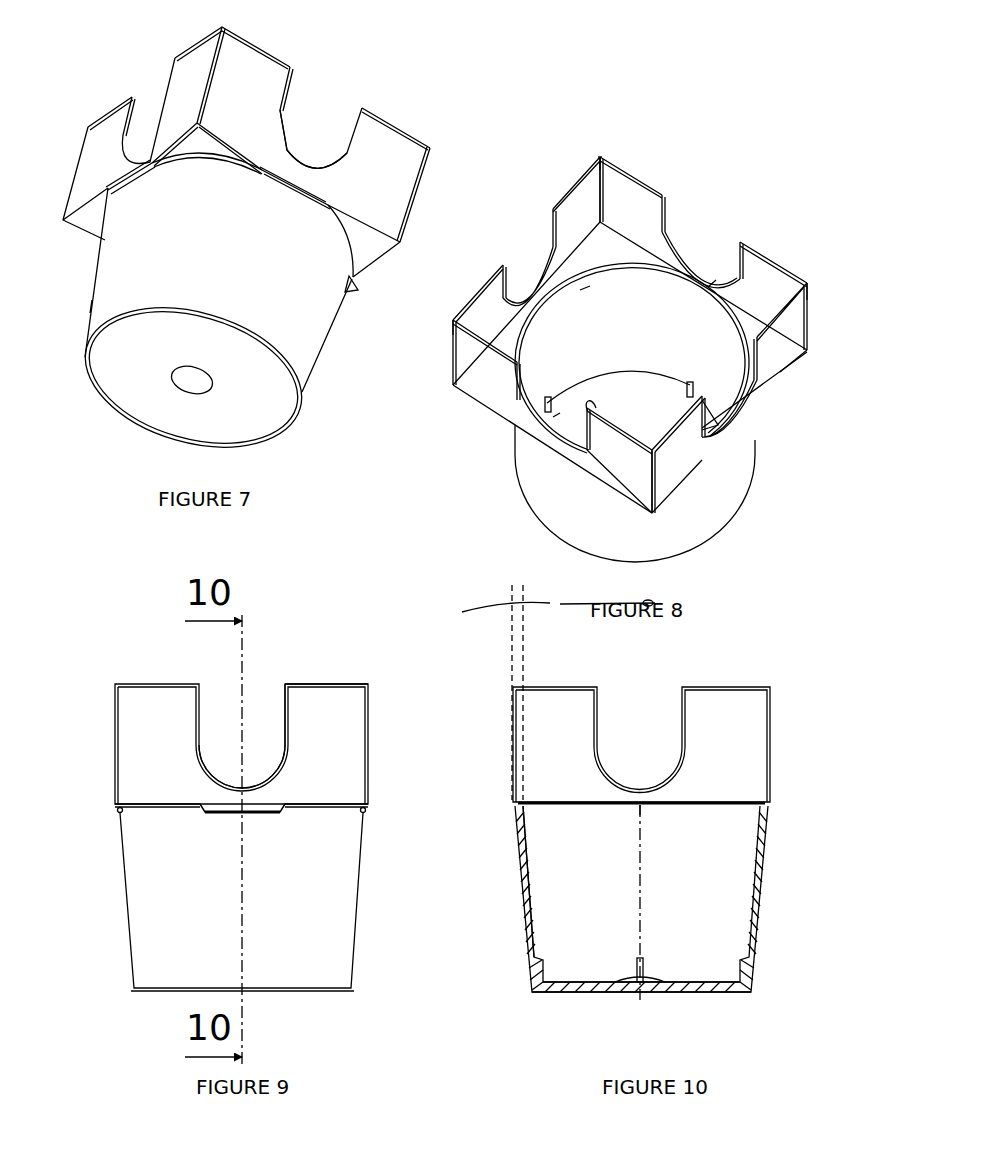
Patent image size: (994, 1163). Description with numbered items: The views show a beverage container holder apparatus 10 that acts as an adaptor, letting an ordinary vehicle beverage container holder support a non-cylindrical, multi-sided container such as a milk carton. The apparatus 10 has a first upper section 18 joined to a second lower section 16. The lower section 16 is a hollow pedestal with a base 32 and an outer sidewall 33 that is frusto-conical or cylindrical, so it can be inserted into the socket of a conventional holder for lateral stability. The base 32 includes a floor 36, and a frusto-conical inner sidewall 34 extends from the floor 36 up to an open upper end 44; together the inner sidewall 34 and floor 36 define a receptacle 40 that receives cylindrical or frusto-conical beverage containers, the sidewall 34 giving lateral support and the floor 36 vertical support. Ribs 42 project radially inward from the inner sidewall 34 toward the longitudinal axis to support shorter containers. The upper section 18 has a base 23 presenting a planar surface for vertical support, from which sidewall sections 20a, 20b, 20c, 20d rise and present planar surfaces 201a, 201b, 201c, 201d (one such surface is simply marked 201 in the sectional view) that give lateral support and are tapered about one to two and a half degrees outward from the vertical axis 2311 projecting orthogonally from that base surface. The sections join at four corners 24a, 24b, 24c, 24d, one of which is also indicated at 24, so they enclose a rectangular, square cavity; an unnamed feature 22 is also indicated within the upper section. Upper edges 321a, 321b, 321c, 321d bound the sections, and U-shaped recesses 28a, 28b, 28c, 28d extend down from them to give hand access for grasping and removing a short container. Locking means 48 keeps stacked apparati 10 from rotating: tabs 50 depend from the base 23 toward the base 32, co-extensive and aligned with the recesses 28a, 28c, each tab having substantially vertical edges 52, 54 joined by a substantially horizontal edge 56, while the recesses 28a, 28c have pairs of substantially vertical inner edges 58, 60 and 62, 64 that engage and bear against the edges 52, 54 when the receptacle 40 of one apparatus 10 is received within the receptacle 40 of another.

In FIG. 7, the beverage container holder apparatus 10 is at (92, 288).
In FIG. 7, the second lower section 16 is at (304, 370).
In FIG. 8, the second lower section 16 is at (578, 530).
In FIG. 9, the second lower section 16 is at (363, 935).
In FIG. 10, the second lower section 16 is at (771, 745).
In FIG. 7, the first upper section 18 is at (426, 150).
In FIG. 8, the first upper section 18 is at (468, 390).
In FIG. 9, the first upper section 18 is at (375, 745).
In FIG. 10, the first upper section 18 is at (760, 878).
In FIG. 8, the sidewall section 20a is at (624, 512).
In FIG. 9, the sidewall section 20a is at (305, 702).
In FIG. 8, the sidewall section 20b is at (507, 280).
In FIG. 8, the sidewall section 20c is at (632, 178).
In FIG. 8, the sidewall section 20d is at (768, 372).
In FIG. 10, the corner tab 201 is at (520, 790).
In FIG. 8, the planar surface 201a is at (470, 375).
In FIG. 8, the planar surface 201b is at (487, 310).
In FIG. 8, the planar surface 201c is at (654, 222).
In FIG. 8, the planar surface 201d is at (807, 345).
In FIG. 8, the interior of bracket 22 is at (606, 275).
In FIG. 7, the base 23 is at (358, 290).
In FIG. 8, the corner post 24 is at (600, 182).
In FIG. 8, the corner 24a is at (652, 490).
In FIG. 8, the corner 24b is at (452, 322).
In FIG. 8, the corner 24c is at (600, 158).
In FIG. 8, the corner 24d is at (807, 290).
In FIG. 8, the recess 28a is at (555, 450).
In FIG. 8, the recess 28b is at (583, 226).
In FIG. 8, the recess 28c is at (688, 252).
In FIG. 8, the recess 28d is at (730, 408).
In FIG. 7, the base 32 is at (152, 412).
In FIG. 10, the base 32 is at (716, 994).
In FIG. 10, the outer sidewall 33 is at (781, 830).
In FIG. 8, the inner sidewall 34 is at (675, 330).
In FIG. 10, the inner sidewall 34 is at (531, 886).
In FIG. 8, the floor 36 is at (660, 430).
In FIG. 10, the floor 36 is at (556, 976).
In FIG. 8, the receptacle 40 is at (553, 417).
In FIG. 10, the receptacle 40 is at (724, 912).
In FIG. 8, the ribs 42 is at (549, 396).
In FIG. 10, the ribs 42 is at (649, 971).
In FIG. 8, the upper end 44 is at (742, 345).
In FIG. 7, the locking means 48 is at (126, 193).
In FIG. 9, the locking means 48 is at (215, 818).
In FIG. 7, the tabs 50 is at (312, 170).
In FIG. 9, the tabs 50 is at (262, 817).
In FIG. 9, the substantially vertical edge 52 is at (199, 822).
In FIG. 9, the substantially vertical edge 54 is at (283, 806).
In FIG. 9, the substantially horizontal edge 56 is at (273, 817).
In FIG. 8, the substantially vertical inner edge 58 is at (613, 343).
In FIG. 8, the substantially vertical inner edge 60 is at (590, 404).
In FIG. 8, the substantially vertical inner edge 62 is at (667, 213).
In FIG. 8, the substantially vertical inner edge 64 is at (716, 280).
In FIG. 8, the upper edge 321a is at (595, 464).
In FIG. 8, the upper edge 321b is at (466, 272).
In FIG. 8, the upper edge 321c is at (752, 268).
In FIG. 8, the upper edge 321d is at (700, 460).
In FIG. 10, the vertical axis 2311 is at (525, 655).